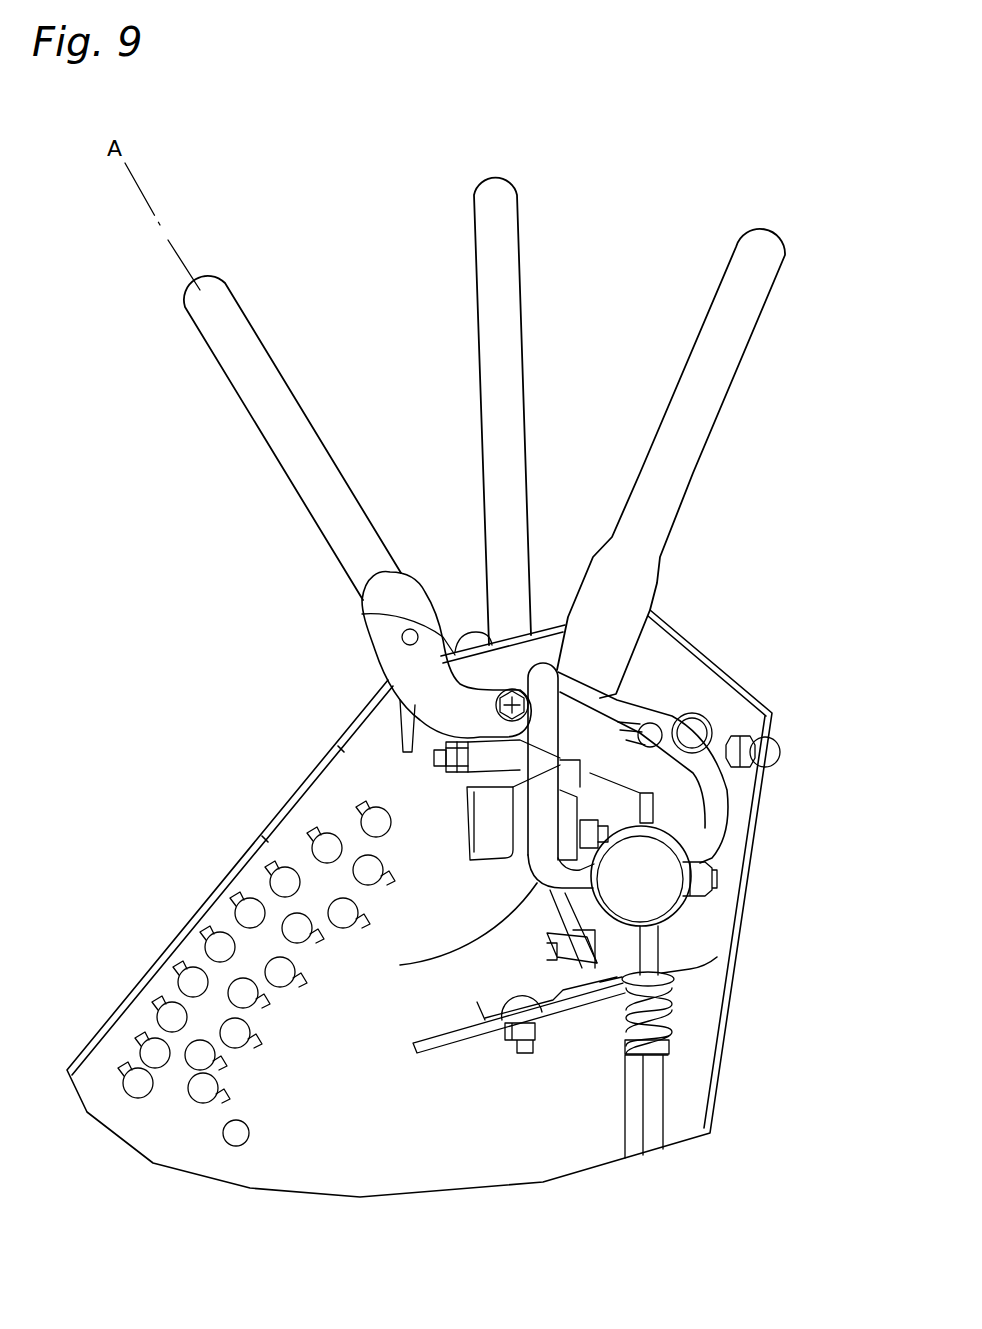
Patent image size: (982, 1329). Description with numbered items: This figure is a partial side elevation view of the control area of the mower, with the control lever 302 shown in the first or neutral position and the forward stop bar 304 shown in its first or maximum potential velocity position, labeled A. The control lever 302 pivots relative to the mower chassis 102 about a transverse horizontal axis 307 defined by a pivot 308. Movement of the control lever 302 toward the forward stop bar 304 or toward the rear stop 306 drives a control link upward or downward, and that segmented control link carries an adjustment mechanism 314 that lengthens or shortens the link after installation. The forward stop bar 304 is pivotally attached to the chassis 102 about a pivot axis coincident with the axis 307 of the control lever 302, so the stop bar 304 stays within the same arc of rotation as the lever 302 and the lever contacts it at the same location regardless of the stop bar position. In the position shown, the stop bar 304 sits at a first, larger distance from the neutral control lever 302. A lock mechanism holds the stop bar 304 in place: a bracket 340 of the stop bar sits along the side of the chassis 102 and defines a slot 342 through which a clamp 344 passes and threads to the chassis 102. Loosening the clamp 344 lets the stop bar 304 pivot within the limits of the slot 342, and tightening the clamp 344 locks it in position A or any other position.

The mower chassis 102 is at (740, 900).
The control lever 302 is at (505, 173).
The forward stop bar 304 is at (215, 276).
The rear stop 306 is at (772, 233).
The transverse horizontal axis 307 is at (443, 760).
The pivot 308 is at (362, 614).
The adjustment mechanism 314 is at (665, 1100).
The bracket 340 is at (748, 748).
The slot 342 is at (700, 840).
The clamp 344 is at (400, 965).